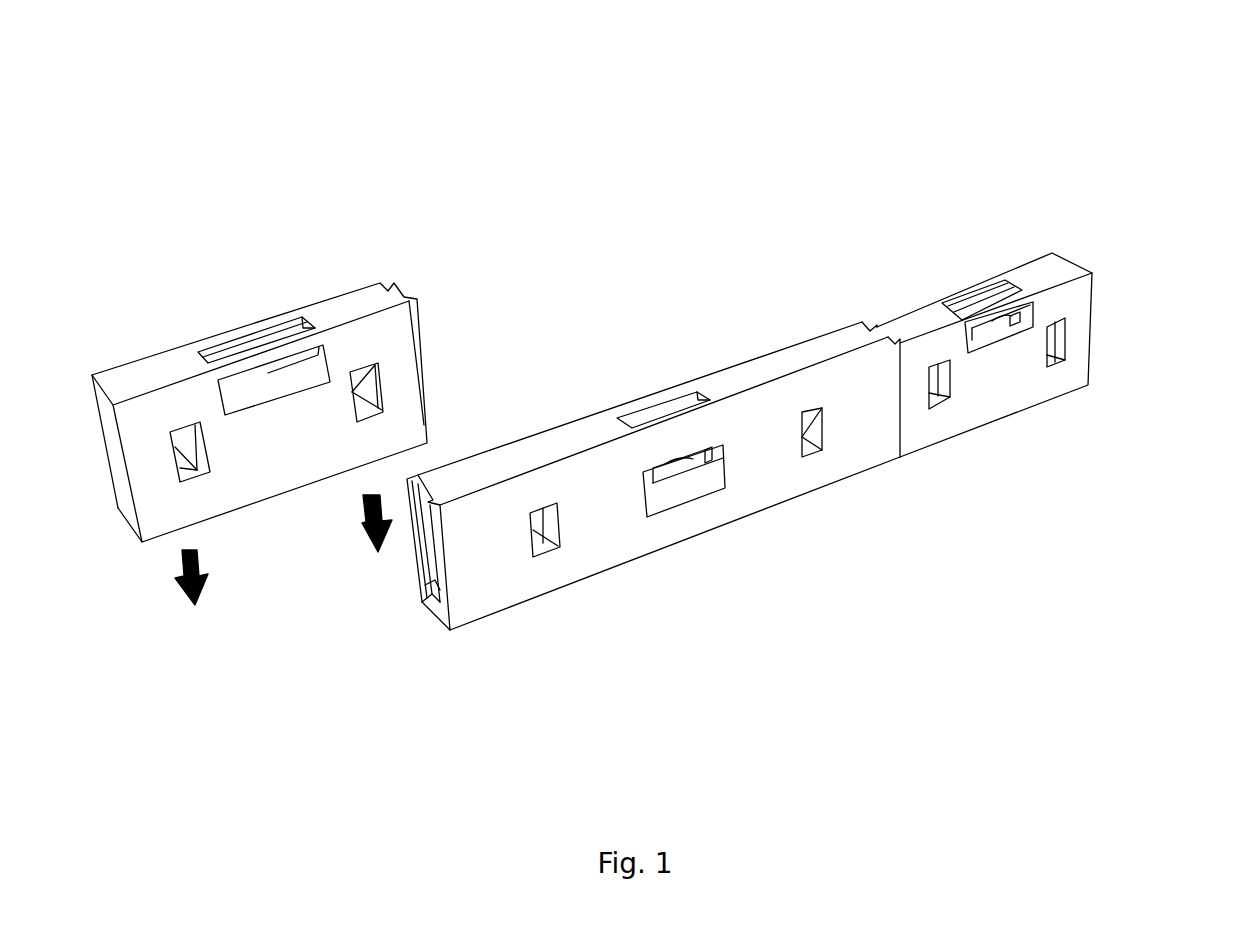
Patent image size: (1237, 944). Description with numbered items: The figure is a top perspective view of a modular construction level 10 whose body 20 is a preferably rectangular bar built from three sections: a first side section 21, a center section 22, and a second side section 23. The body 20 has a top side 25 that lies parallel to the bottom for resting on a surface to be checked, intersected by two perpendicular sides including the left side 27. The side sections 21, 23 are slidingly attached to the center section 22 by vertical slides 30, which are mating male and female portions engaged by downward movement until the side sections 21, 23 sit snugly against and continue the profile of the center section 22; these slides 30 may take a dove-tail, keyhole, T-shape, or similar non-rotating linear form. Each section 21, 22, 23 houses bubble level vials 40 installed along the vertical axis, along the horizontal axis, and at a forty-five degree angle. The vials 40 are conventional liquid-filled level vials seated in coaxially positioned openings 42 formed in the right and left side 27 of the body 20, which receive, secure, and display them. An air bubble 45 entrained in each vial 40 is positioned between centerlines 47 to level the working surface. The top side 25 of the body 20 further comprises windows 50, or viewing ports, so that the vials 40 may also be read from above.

The modular construction level 10 is at (1086, 119).
The body 20 is at (885, 393).
The first side section 21 is at (142, 372).
The center section 22 is at (550, 440).
The second side section 23 is at (1037, 272).
The top side 25 is at (806, 298).
The left side 27 is at (882, 458).
The slides 30 is at (440, 500).
The bubble level vial 40 is at (227, 380).
The openings 42 is at (247, 408).
The air bubble 45 is at (682, 458).
The centerlines 47 is at (268, 373).
The windows 50 is at (205, 342).